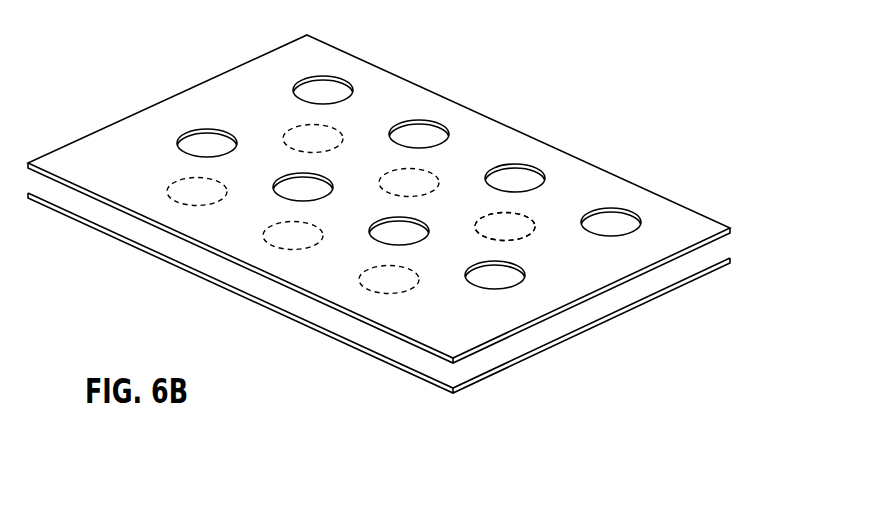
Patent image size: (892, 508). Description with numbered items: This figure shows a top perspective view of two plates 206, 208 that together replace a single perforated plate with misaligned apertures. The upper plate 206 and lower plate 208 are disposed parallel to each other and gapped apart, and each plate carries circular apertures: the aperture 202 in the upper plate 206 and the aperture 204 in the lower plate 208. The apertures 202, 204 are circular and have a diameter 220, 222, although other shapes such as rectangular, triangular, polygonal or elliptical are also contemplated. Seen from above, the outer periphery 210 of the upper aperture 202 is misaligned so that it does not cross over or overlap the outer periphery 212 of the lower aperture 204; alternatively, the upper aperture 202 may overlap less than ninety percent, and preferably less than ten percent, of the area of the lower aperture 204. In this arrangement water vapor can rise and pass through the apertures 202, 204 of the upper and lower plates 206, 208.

The aperture 202 is at (622, 222).
The aperture 204 is at (522, 225).
The upper plate 206 is at (617, 281).
The lower plate 208 is at (560, 336).
The outer periphery 210 is at (607, 212).
The outer periphery 212 is at (505, 213).
The diameter 220 is at (278, 110).
The diameter 222 is at (365, 203).